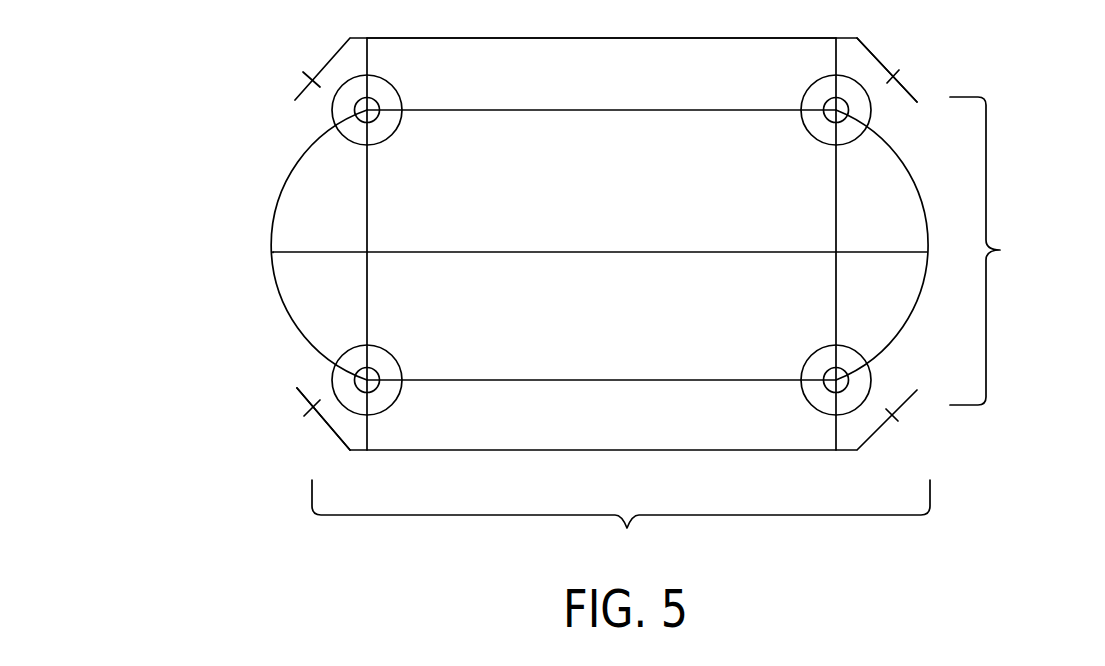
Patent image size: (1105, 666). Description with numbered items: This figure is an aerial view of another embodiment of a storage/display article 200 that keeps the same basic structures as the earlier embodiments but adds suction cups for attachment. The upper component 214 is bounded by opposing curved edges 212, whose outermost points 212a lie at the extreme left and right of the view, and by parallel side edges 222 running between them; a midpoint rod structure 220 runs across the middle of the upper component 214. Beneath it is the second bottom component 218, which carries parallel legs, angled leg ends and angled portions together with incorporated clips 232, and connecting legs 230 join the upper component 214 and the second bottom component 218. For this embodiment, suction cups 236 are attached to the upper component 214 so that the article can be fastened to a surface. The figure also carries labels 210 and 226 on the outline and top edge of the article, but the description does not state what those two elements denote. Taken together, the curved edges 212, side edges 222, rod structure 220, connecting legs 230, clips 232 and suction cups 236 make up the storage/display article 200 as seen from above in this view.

The storage/display article 200 is at (932, 77).
The base 210 is at (302, 400).
The opposing curved edges 212 is at (280, 202).
The outermost points of the curved edges 212a is at (273, 252).
The upper component 214 is at (998, 251).
The second bottom component 218 is at (621, 525).
The midpoint rod structure 220 is at (557, 252).
The parallel side edges 222 is at (607, 110).
The top edge 226 is at (570, 38).
The connecting legs 230 is at (367, 428).
The incorporated clips 232 is at (307, 413).
The suction cups 236 is at (875, 100).